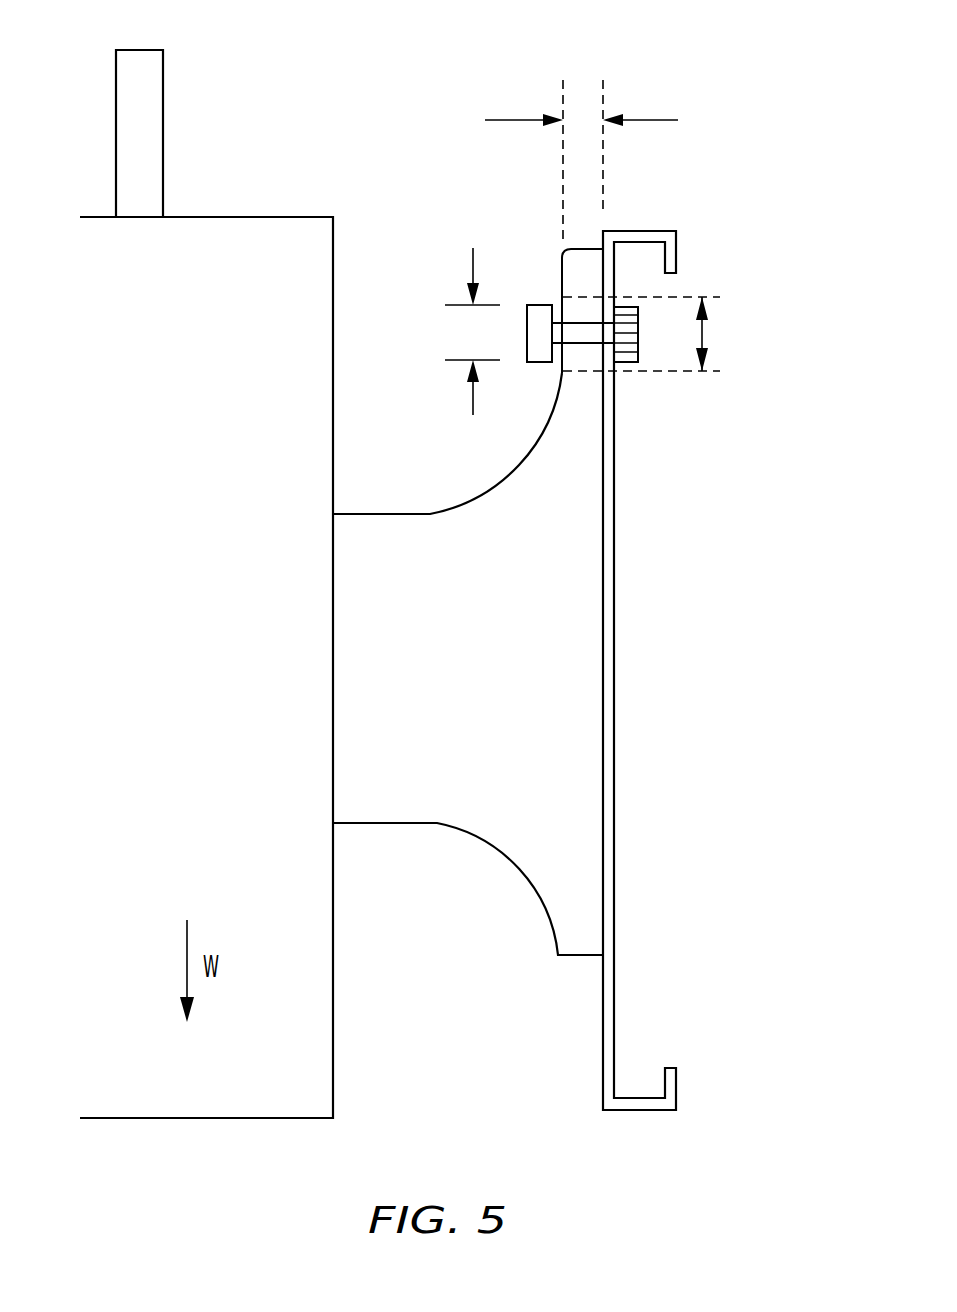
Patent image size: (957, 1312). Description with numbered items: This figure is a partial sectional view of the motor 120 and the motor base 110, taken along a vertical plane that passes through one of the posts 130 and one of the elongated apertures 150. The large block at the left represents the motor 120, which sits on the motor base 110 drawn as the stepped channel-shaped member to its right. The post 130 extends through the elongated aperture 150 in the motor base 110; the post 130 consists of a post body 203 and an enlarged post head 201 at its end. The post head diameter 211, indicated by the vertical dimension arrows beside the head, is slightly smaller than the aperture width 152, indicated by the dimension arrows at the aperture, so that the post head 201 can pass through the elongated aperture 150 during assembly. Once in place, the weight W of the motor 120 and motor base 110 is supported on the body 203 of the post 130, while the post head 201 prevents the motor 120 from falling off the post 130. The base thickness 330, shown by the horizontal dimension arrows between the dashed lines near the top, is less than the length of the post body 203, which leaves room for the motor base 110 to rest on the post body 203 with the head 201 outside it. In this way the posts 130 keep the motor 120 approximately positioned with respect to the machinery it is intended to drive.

The motor base 110 is at (504, 678).
The motor 120 is at (247, 678).
The post 130 is at (573, 332).
The elongated aperture 150 is at (582, 362).
The aperture width 152 is at (708, 338).
The post head 201 is at (537, 315).
The post body 203 is at (590, 333).
The post head diameter 211 is at (465, 332).
The base thickness 330 is at (580, 93).